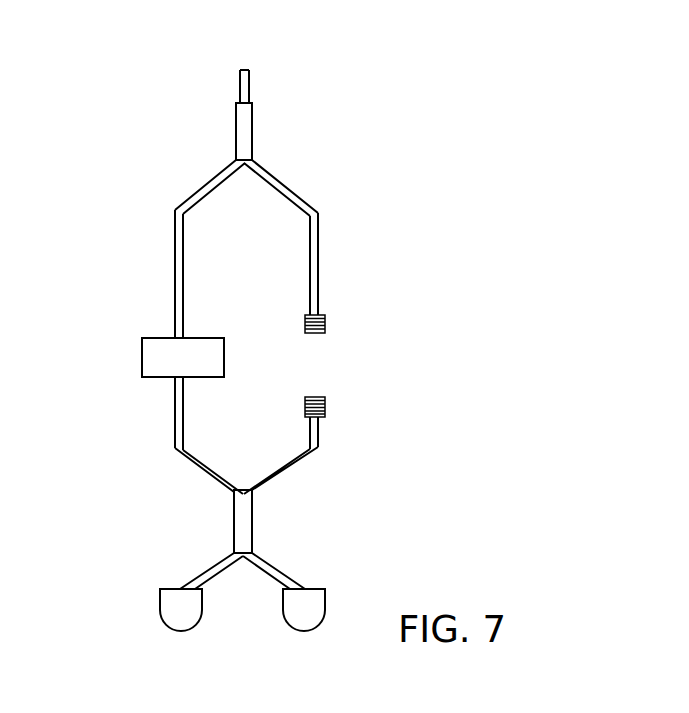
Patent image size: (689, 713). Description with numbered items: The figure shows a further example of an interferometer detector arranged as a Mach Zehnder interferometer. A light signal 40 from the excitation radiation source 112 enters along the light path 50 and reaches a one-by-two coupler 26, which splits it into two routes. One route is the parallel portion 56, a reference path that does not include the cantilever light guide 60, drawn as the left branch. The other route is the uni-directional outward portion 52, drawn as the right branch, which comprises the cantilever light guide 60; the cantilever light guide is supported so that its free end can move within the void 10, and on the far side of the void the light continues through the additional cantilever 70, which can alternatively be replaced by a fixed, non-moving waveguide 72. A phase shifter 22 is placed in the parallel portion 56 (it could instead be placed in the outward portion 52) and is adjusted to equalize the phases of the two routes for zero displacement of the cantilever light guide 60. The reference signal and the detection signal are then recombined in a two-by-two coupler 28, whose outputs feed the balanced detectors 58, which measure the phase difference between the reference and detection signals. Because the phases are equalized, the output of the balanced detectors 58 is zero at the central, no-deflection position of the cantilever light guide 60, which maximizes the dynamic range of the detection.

The excitation radiation source 112 is at (221, 74).
The light signal 40 is at (249, 65).
The light path 50 is at (253, 91).
The 1×2 coupler 26 is at (255, 143).
The outward portion 52 is at (325, 223).
The cantilever light guide 60 is at (326, 283).
The void 10 is at (328, 360).
The additional cantilever 70 is at (349, 445).
The fixed waveguide 72 is at (326, 434).
The parallel portion 56 is at (168, 272).
The phase shifter 22 is at (140, 355).
The 2×2 coupler 28 is at (254, 527).
The balanced detectors 58 is at (185, 630).